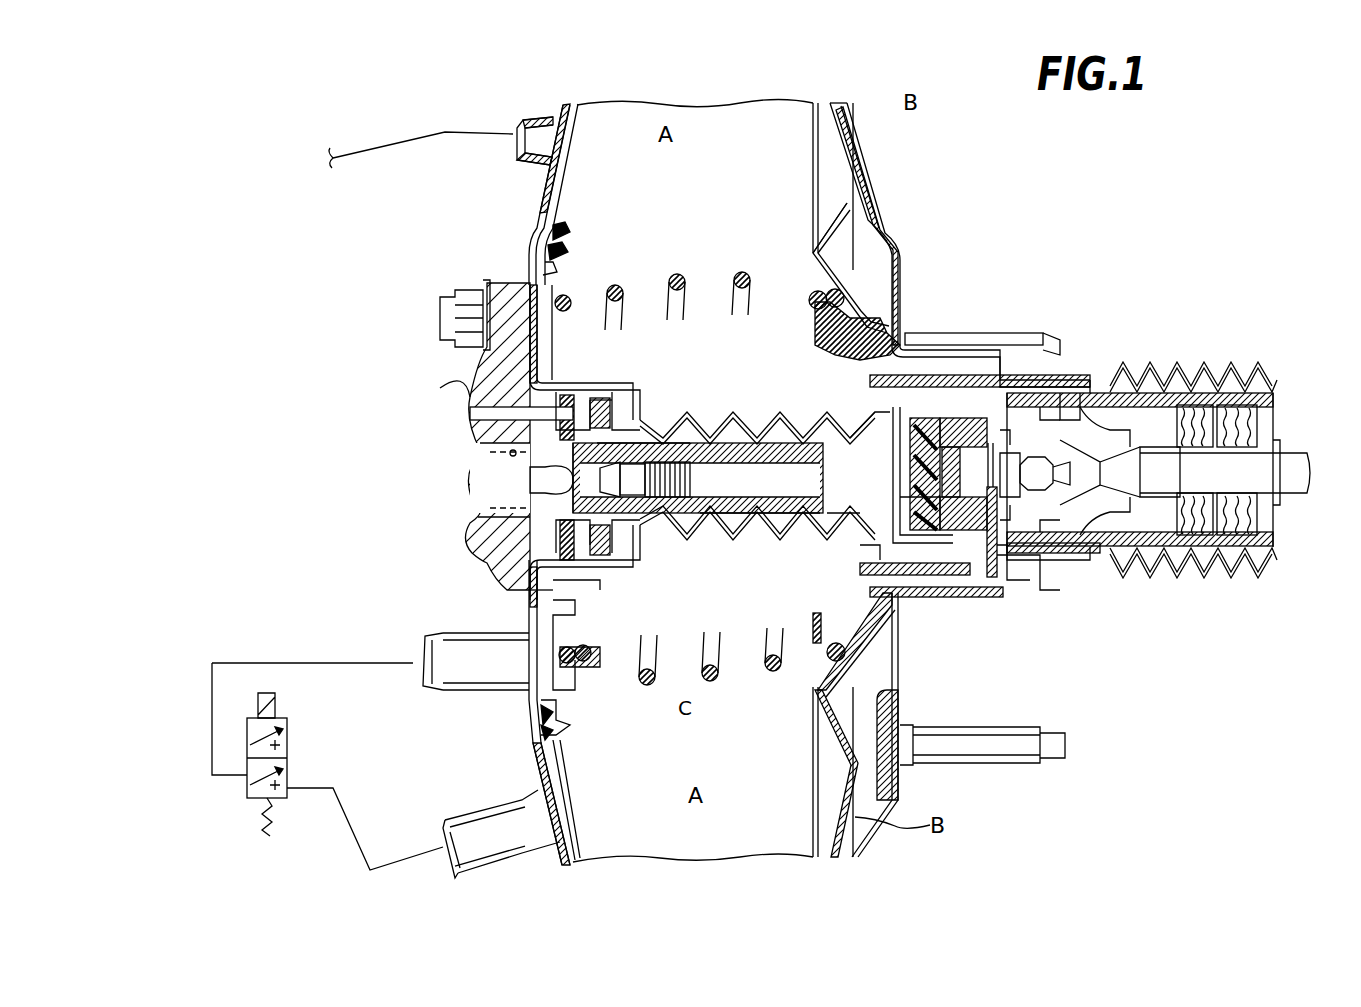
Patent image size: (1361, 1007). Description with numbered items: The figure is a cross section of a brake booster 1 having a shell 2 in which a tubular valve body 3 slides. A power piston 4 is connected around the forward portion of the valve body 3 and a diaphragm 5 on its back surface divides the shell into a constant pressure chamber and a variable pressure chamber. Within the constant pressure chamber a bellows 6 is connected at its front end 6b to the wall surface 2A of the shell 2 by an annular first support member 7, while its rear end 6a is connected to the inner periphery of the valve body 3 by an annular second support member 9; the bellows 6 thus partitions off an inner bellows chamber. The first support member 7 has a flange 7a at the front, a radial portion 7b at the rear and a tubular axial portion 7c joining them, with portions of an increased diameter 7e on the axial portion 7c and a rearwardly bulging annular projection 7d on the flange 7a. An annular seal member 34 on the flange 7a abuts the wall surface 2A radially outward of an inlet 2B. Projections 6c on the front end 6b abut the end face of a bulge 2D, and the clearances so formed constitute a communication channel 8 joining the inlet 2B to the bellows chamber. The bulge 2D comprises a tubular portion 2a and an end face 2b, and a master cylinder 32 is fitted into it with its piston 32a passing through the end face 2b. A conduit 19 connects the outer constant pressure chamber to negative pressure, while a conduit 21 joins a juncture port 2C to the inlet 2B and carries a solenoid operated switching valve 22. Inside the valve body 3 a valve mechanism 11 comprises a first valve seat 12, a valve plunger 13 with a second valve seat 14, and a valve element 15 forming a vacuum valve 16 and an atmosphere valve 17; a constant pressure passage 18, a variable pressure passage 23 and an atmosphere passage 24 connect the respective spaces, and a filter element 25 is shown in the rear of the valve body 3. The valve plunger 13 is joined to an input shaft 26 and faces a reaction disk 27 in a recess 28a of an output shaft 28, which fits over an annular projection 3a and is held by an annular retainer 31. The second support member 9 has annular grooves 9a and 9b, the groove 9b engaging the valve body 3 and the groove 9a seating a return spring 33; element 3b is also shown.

The brake booster 1 is at (985, 238).
The shell 2 is at (898, 238).
The wall surface 2A is at (545, 193).
The inlet 2B is at (463, 633).
The juncture port 2C is at (488, 850).
The bulge 2D is at (540, 553).
The tubular portion 2a is at (527, 593).
The end face 2b is at (647, 430).
The valve body 3 is at (907, 380).
The annular projection 3a is at (917, 593).
The rear shell flange 3b is at (933, 593).
The power piston 4 is at (833, 213).
The diaphragm 5 is at (850, 152).
The bellows 6 is at (683, 517).
The rear end 6a is at (860, 398).
The front end 6b is at (620, 390).
The projections 6c is at (633, 527).
The first support member 7 is at (583, 260).
The flange 7a is at (553, 640).
The radial portion 7b is at (630, 562).
The axial portion 7c is at (583, 390).
The annular projection 7d is at (590, 690).
The portions of an increased diameter 7e is at (597, 587).
The communication channel 8 is at (600, 590).
The second support member 9 is at (813, 323).
The annular groove 9a is at (830, 290).
The annular groove 9b is at (810, 313).
The valve mechanism 11 is at (1113, 573).
The first valve seat 12 is at (1100, 377).
The valve plunger 13 is at (983, 530).
The second valve seat 14 is at (1026, 475).
The valve element 15 is at (1107, 390).
The vacuum valve 16 is at (1080, 407).
The atmosphere valve 17 is at (1073, 447).
The constant pressure passage 18 is at (973, 380).
The conduit 19 is at (365, 155).
The conduit 21 is at (253, 663).
The solenoid operated switching valve 22 is at (247, 793).
The variable pressure passage 23 is at (1013, 563).
The atmosphere passage 24 is at (1163, 560).
The spring 25 is at (1233, 540).
The input shaft 26 is at (1290, 460).
The reaction disk 27 is at (827, 473).
The output shaft 28 is at (787, 507).
The recess 28a is at (837, 503).
The annular retainer 31 is at (877, 550).
The master cylinder 32 is at (480, 393).
The piston 32a is at (687, 447).
The return spring 33 is at (740, 263).
The annular seal member 34 is at (553, 227).